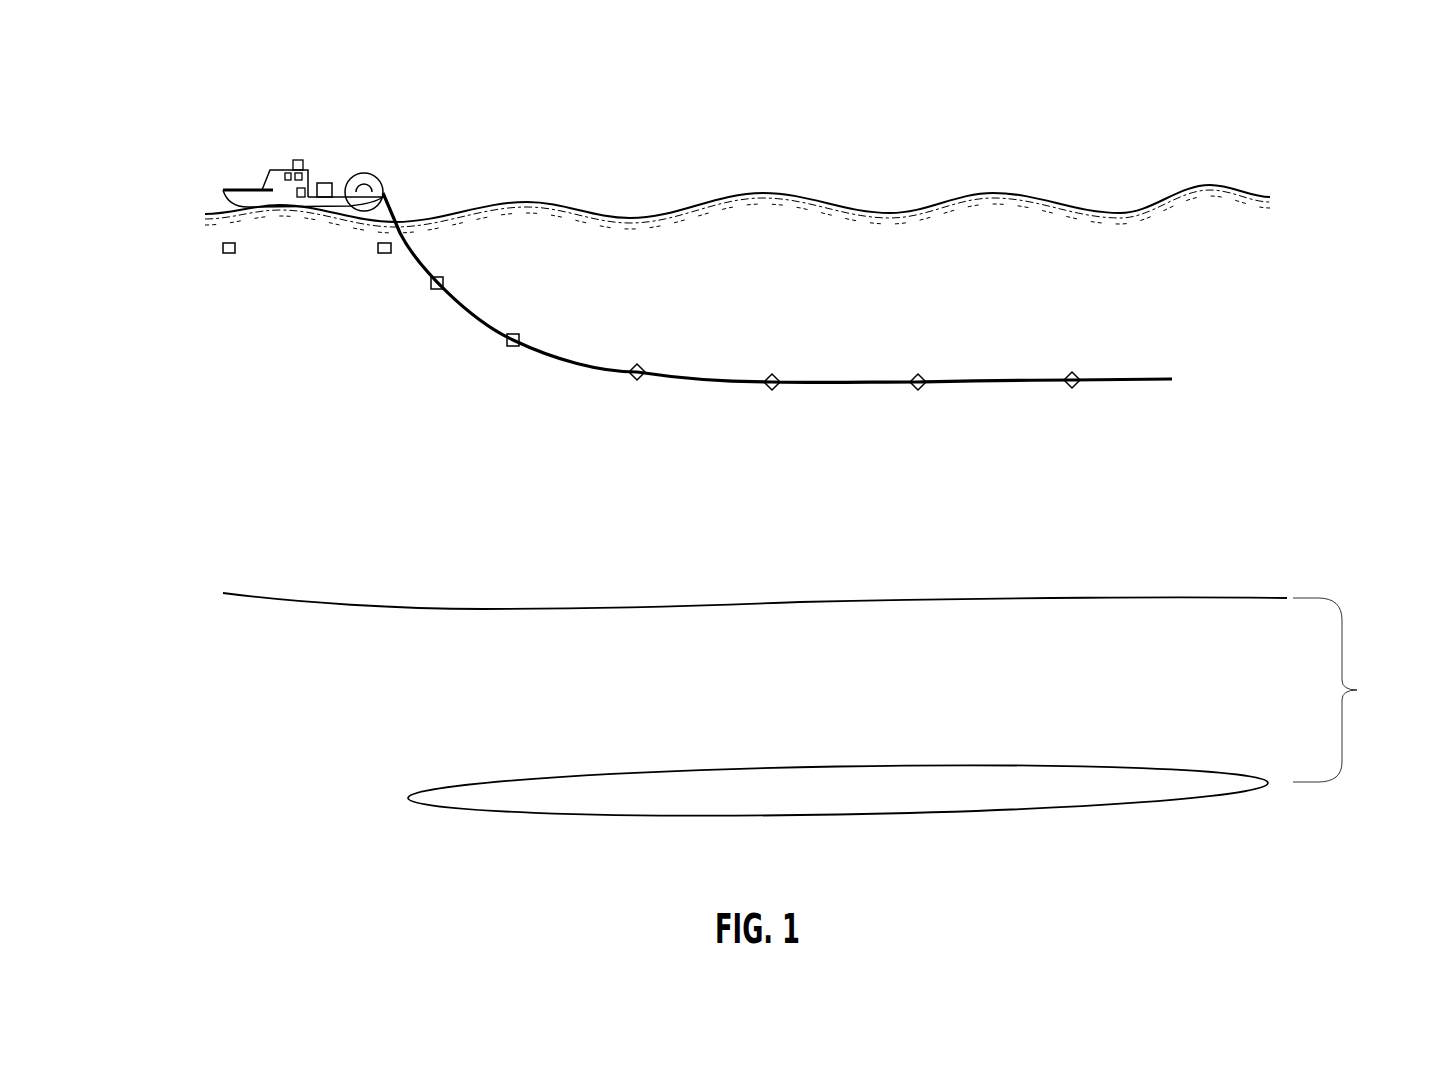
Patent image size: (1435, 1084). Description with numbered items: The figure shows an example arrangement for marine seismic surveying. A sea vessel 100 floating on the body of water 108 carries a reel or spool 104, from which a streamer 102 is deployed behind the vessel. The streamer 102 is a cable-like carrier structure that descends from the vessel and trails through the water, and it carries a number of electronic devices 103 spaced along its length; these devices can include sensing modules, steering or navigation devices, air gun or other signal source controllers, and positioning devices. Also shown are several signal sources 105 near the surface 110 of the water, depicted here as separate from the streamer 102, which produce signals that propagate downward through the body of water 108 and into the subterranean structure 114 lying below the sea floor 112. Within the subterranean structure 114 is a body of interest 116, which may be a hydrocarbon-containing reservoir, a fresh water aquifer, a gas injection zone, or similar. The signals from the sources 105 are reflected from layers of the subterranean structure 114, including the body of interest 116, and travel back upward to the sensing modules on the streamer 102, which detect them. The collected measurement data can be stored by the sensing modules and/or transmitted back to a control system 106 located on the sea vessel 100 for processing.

The sea vessel 100 is at (235, 188).
The streamer 102 is at (587, 355).
The electronic devices 103 is at (632, 376).
The reel or spool 104 is at (378, 175).
The signal sources 105 is at (228, 255).
The control system 106 is at (325, 180).
The body of water 108 is at (582, 537).
The water surface 110 is at (838, 205).
The sea floor 112 is at (700, 606).
The subterranean structure 114 is at (1348, 690).
The body of interest 116 is at (702, 787).